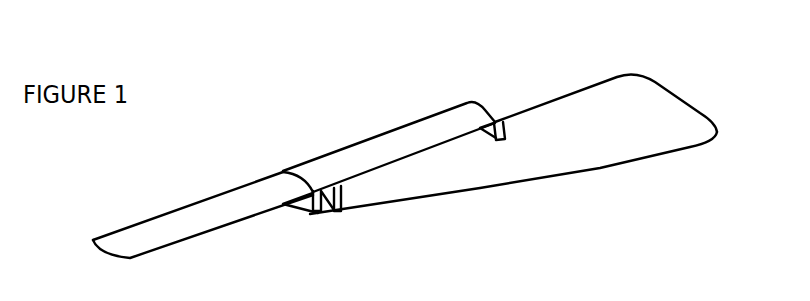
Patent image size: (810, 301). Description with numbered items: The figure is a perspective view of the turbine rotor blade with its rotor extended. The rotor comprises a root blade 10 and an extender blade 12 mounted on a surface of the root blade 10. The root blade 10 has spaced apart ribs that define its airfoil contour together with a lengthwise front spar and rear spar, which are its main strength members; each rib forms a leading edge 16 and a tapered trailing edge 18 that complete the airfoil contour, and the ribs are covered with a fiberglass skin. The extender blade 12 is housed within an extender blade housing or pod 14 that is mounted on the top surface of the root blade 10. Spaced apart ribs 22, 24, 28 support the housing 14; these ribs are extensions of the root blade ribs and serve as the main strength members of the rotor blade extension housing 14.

The root blade 10 is at (700, 112).
The extender blade 12 is at (138, 225).
The extender blade housing or pod 14 is at (320, 157).
The leading edge 16 is at (565, 96).
The tapered trailing edge 18 is at (647, 158).
The rib 22 is at (317, 212).
The rib 24 is at (339, 209).
The rib 28 is at (498, 140).